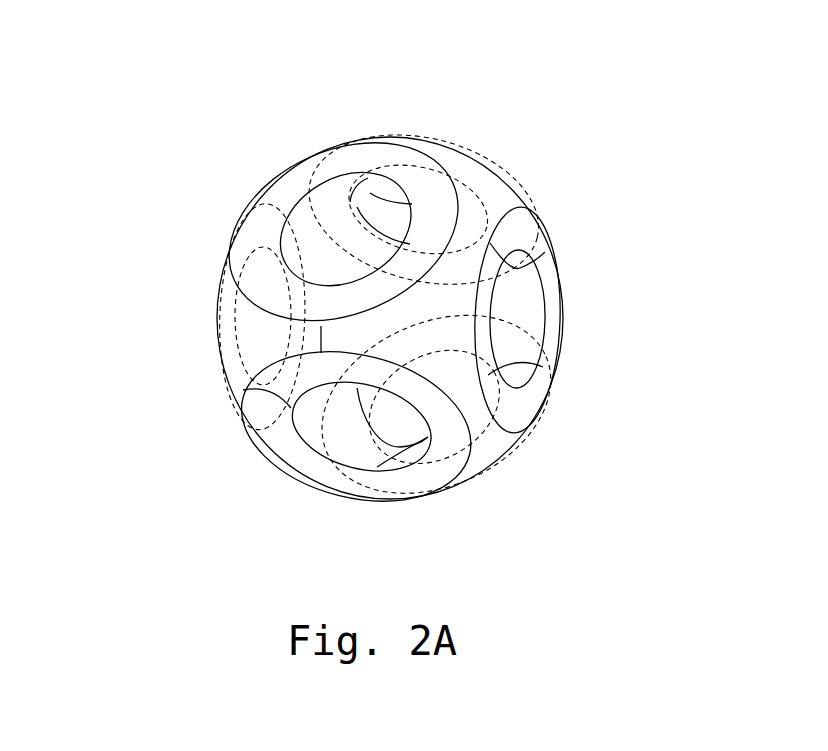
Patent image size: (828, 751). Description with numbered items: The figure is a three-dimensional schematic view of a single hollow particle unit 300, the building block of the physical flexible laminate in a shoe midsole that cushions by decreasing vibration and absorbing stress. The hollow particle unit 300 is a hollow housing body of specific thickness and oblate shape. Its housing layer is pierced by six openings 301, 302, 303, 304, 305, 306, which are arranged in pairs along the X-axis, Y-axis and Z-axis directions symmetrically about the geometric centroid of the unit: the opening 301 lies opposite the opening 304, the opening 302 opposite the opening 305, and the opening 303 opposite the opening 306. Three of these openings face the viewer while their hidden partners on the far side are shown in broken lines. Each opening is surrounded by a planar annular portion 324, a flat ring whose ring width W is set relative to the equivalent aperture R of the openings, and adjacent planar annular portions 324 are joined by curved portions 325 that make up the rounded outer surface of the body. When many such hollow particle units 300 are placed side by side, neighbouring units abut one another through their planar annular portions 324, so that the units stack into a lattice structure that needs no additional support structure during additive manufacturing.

The hollow particle unit 300 is at (606, 262).
The opening 301 is at (325, 213).
The opening 302 is at (220, 337).
The opening 303 is at (342, 432).
The opening 304 is at (467, 393).
The opening 305 is at (520, 311).
The opening 306 is at (487, 190).
The planar annular portion 324 is at (283, 193).
The curved portion 325 is at (457, 153).